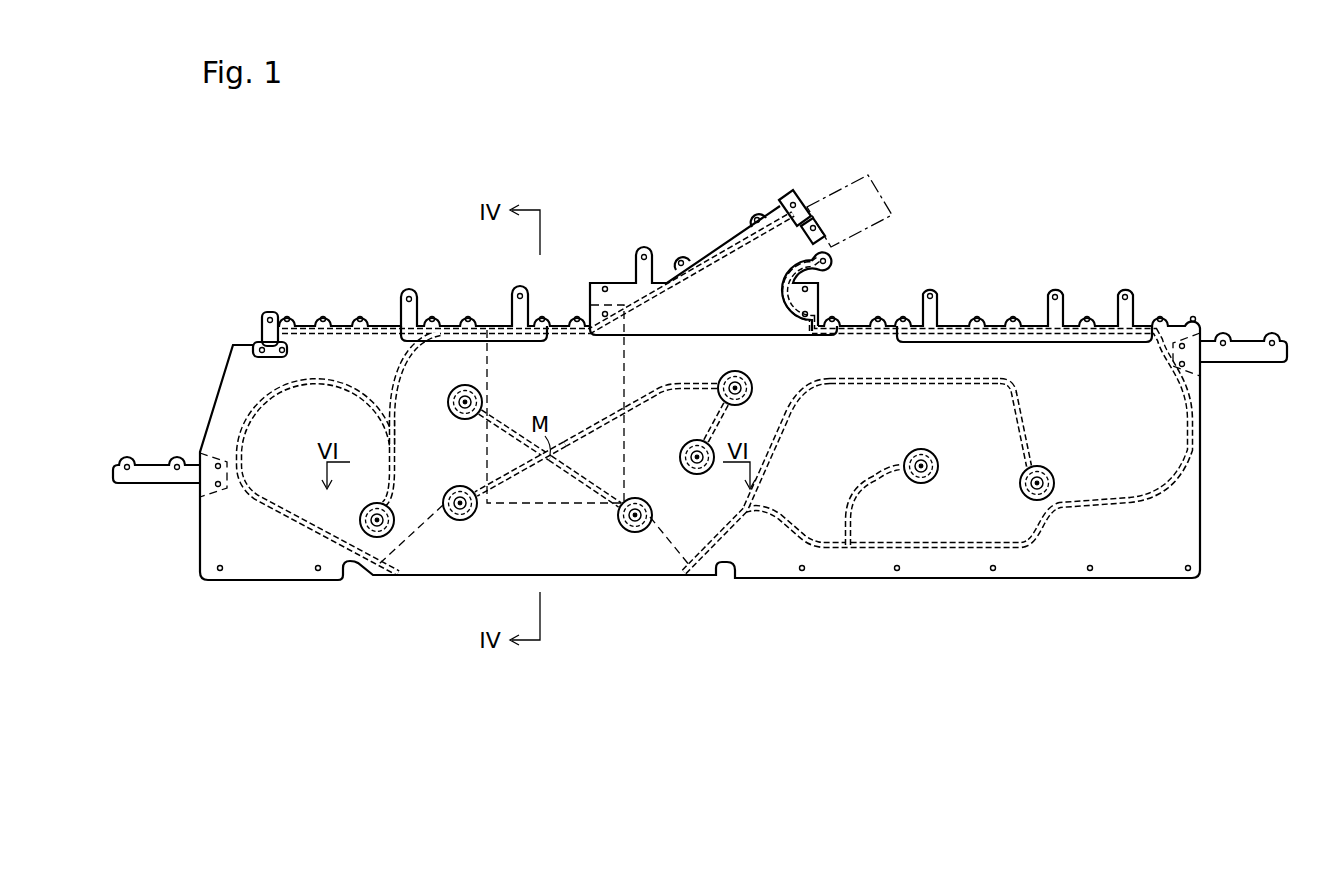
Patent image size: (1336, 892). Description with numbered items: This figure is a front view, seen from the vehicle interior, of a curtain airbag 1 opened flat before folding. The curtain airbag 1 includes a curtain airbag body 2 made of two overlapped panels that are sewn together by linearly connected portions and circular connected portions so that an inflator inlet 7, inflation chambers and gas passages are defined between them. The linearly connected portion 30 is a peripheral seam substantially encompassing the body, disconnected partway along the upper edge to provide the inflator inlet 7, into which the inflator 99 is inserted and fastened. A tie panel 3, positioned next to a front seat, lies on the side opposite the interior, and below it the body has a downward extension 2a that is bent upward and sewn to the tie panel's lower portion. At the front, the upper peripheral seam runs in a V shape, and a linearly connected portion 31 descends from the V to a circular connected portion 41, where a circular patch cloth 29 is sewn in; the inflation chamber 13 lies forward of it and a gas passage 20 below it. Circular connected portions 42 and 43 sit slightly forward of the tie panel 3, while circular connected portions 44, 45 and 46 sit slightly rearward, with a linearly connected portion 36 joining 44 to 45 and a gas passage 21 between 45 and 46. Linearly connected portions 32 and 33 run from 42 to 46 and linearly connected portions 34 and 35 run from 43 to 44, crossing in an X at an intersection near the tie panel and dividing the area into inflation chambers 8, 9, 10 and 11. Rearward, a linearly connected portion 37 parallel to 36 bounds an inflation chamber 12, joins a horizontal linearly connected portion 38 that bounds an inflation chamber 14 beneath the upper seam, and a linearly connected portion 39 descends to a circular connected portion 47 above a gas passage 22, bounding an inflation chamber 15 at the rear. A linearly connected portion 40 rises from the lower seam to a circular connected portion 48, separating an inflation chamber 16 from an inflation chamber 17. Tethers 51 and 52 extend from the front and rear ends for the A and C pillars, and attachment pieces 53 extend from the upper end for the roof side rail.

The curtain airbag 1 is at (850, 146).
The curtain airbag body 2 is at (1025, 283).
The extension 2a is at (350, 577).
The tie panel 3 is at (628, 373).
The inflator inlet 7 is at (812, 248).
The inflation chamber 8 is at (544, 393).
The inflation chamber 9 is at (432, 460).
The inflation chamber 10 is at (548, 543).
The inflation chamber 11 is at (638, 450).
The inflation chamber 12 is at (708, 506).
The inflation chamber 13 is at (272, 445).
The inflation chamber 14 is at (866, 369).
The inflation chamber 15 is at (1106, 433).
The inflation chamber 16 is at (934, 521).
The inflation chamber 17 is at (859, 433).
The gas passage 20 is at (279, 566).
The gas passage 21 is at (659, 500).
The gas passage 22 is at (1036, 520).
The patch cloth 29 is at (359, 518).
The linearly connected portion 30 is at (243, 427).
The linearly connected portion 31 is at (390, 437).
The linearly connected portion 32 is at (503, 432).
The linearly connected portion 33 is at (578, 478).
The linearly connected portion 34 is at (507, 480).
The linearly connected portion 35 is at (583, 430).
The linearly connected portion 36 is at (722, 428).
The linearly connected portion 37 is at (790, 448).
The linearly connected portion 38 is at (920, 380).
The linearly connected portion 39 is at (1022, 422).
The linearly connected portion 40 is at (862, 502).
The circular connected portion 41 is at (372, 503).
The circular connected portion 42 is at (457, 387).
The circular connected portion 43 is at (442, 500).
The circular connected portion 44 is at (749, 375).
The circular connected portion 45 is at (697, 440).
The circular connected portion 46 is at (622, 528).
The circular connected portion 47 is at (1055, 483).
The circular connected portion 48 is at (934, 453).
The tether 51 is at (137, 485).
The tether 52 is at (1253, 364).
The attachment piece 53 is at (258, 318).
The inflator 99 is at (850, 238).